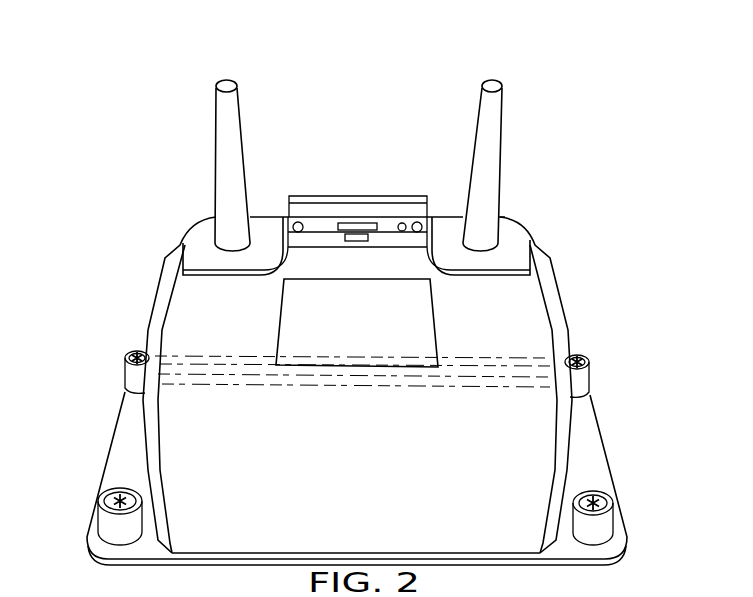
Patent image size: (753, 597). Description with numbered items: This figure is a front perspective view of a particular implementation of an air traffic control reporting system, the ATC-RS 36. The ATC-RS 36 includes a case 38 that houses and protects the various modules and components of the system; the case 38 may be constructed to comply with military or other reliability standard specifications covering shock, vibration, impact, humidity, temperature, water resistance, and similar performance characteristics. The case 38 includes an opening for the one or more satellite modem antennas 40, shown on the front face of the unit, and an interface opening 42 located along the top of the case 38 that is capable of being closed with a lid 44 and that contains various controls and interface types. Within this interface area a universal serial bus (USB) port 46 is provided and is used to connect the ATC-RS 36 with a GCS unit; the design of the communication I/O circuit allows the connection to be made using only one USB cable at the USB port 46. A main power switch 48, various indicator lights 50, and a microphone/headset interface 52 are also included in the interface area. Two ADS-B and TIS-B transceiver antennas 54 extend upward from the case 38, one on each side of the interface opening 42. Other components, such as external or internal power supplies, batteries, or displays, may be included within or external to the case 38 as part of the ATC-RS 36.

The air traffic control reporting system (ATC-RS) 36 is at (126, 201).
The case 38 is at (520, 330).
The satellite modem antenna 40 is at (320, 320).
The interface opening 42 is at (322, 225).
The lid 44 is at (305, 197).
The universal serial bus (USB) port 46 is at (360, 228).
The main power switch 48 is at (358, 237).
The indicator lights 50 is at (403, 223).
The microphone/headset interface 52 is at (419, 223).
The ADS-B and TIS-B transceiver antenna 54 is at (225, 122).